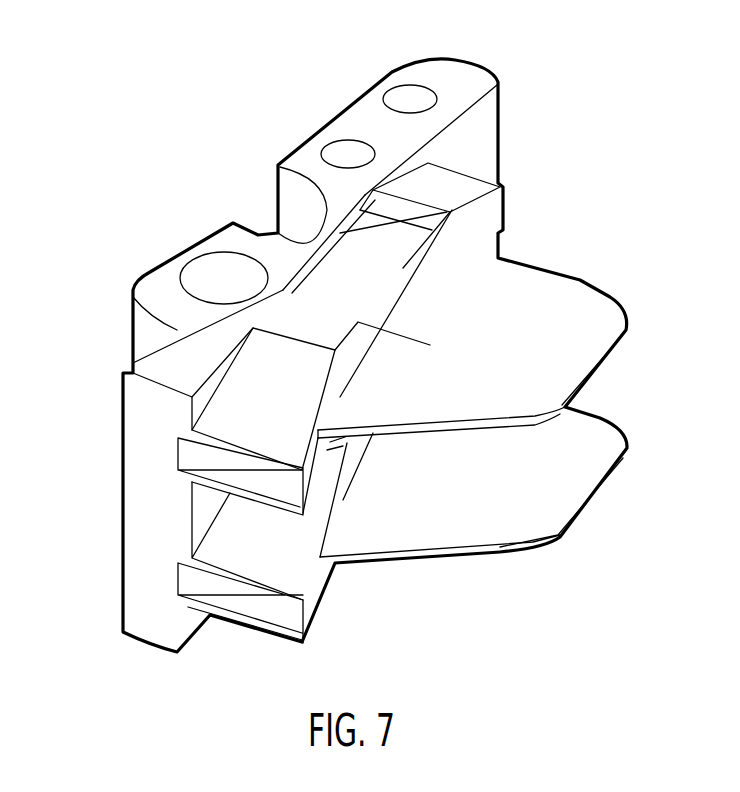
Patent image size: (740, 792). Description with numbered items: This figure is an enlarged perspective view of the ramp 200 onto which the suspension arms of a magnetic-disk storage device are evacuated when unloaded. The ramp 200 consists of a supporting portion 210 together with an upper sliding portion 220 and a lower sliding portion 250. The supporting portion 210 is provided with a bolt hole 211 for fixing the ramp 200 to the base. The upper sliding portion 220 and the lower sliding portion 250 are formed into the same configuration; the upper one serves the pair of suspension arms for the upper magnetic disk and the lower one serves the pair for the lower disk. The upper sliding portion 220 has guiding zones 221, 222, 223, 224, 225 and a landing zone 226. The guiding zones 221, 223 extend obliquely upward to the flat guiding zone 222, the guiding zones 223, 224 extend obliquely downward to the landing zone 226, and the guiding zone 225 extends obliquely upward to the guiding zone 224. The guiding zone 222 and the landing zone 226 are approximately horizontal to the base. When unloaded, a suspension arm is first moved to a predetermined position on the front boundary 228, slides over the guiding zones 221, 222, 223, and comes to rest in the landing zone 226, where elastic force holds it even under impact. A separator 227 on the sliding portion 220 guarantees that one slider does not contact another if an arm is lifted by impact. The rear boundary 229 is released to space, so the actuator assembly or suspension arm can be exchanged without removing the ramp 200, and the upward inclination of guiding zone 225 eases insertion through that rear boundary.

The ramp 200 is at (533, 67).
The supporting portion 210 is at (370, 118).
The bolt hole 211 is at (208, 275).
The upper sliding portion 220 is at (600, 147).
The guiding zone 221 is at (277, 385).
The guiding zone 222 is at (327, 322).
The guiding zone 223 is at (352, 292).
The guiding zone 224 is at (427, 222).
The guiding zone 225 is at (467, 190).
The landing zone 226 is at (395, 250).
The separator 227 is at (572, 322).
The front boundary 228 is at (203, 448).
The rear boundary 229 is at (465, 167).
The lower sliding portion 250 is at (333, 600).